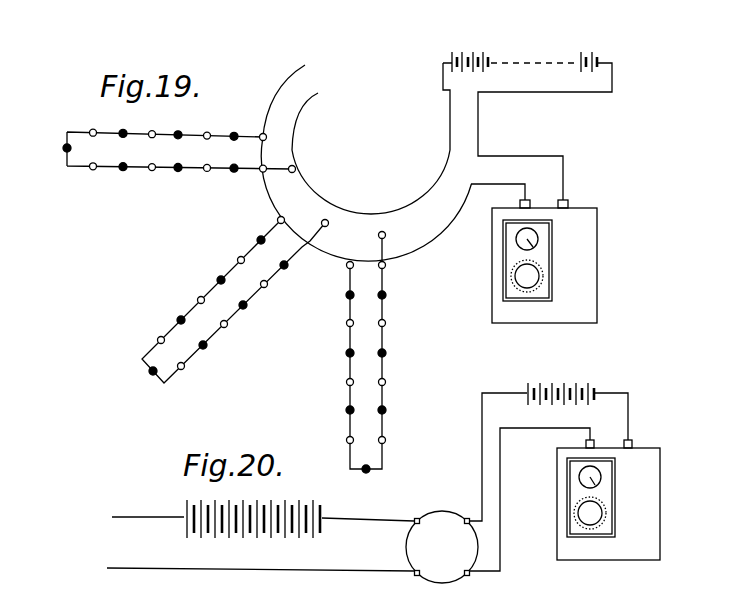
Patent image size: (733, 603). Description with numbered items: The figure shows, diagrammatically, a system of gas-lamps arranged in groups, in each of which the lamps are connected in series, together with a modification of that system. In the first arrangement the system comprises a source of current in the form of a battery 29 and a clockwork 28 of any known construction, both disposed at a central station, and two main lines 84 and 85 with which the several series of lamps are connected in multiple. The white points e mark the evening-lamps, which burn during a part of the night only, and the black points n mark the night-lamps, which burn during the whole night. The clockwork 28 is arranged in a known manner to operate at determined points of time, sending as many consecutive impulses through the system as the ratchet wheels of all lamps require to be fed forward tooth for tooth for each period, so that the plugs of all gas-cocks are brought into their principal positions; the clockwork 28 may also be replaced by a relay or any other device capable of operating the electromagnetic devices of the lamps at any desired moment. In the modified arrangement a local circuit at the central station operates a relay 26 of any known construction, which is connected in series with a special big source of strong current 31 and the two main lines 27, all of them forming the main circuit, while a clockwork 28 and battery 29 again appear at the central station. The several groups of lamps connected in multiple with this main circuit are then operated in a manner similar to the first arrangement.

In FIG. 20, the relay 26 is at (442, 547).
In FIG. 20, the main lines 27 is at (168, 518).
In FIG. 19, the clockwork 28 is at (522, 277).
In FIG. 20, the clockwork 28 is at (572, 513).
In FIG. 19, the battery 29 is at (489, 60).
In FIG. 20, the battery 29 is at (560, 392).
In FIG. 20, the source of strong current 31 is at (253, 532).
In FIG. 19, the main line 84 is at (432, 243).
In FIG. 19, the main line 85 is at (447, 184).
In FIG. 19, the evening-lamps e is at (94, 130).
In FIG. 19, the night-lamps n is at (234, 133).